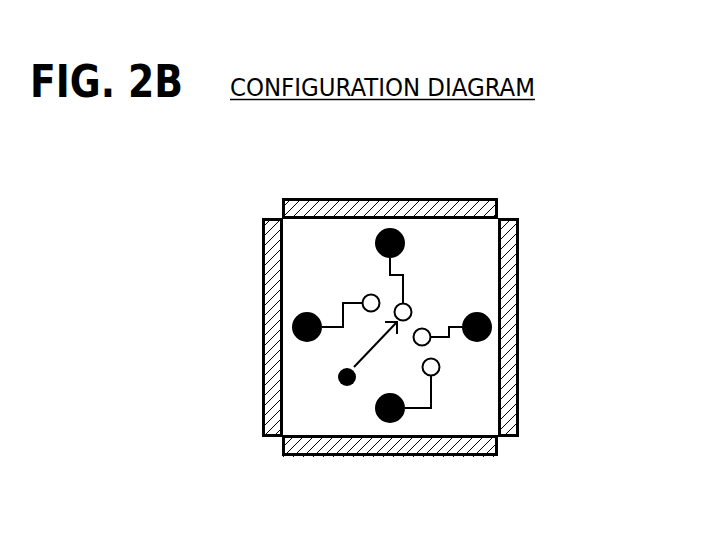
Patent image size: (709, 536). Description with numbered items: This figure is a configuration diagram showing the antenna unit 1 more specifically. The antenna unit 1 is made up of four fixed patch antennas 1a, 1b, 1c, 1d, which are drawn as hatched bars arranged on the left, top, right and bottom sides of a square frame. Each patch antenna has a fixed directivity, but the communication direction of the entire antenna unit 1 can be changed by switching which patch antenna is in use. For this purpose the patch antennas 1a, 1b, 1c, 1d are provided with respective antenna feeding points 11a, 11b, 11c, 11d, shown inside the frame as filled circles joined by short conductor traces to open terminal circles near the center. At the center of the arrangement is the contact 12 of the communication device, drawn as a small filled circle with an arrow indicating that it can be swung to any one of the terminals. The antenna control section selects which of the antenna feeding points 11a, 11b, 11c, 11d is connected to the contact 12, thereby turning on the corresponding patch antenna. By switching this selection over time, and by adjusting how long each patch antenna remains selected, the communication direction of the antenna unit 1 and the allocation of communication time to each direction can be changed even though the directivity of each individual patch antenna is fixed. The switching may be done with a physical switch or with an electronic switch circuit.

The antenna unit 1 is at (356, 323).
The patch antenna 1a is at (262, 255).
The patch antenna 1b is at (442, 199).
The patch antenna 1c is at (519, 272).
The patch antenna 1d is at (460, 457).
The antenna feeding point 11a is at (292, 327).
The antenna feeding point 11b is at (382, 230).
The antenna feeding point 11c is at (492, 319).
The antenna feeding point 11d is at (397, 421).
The contact of the communication device 12 is at (338, 377).